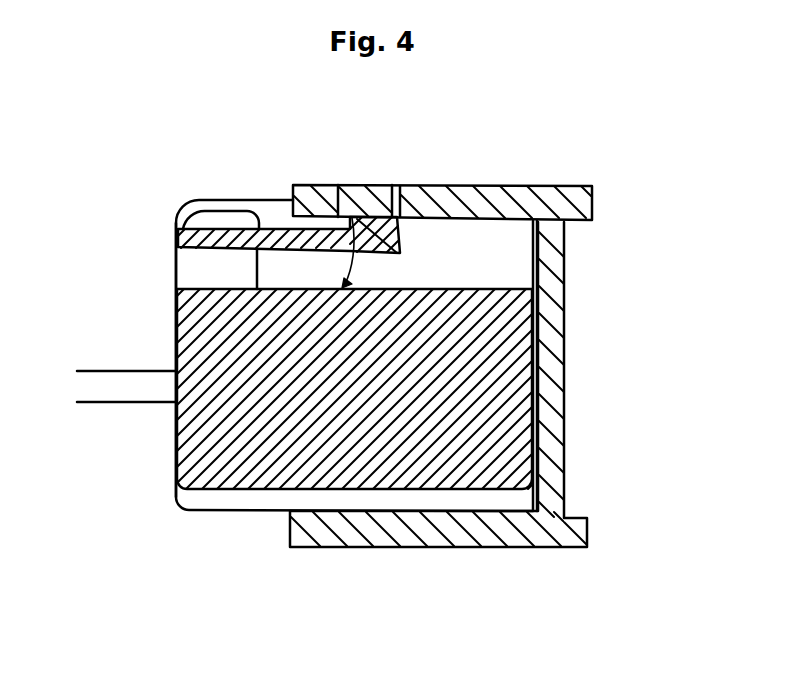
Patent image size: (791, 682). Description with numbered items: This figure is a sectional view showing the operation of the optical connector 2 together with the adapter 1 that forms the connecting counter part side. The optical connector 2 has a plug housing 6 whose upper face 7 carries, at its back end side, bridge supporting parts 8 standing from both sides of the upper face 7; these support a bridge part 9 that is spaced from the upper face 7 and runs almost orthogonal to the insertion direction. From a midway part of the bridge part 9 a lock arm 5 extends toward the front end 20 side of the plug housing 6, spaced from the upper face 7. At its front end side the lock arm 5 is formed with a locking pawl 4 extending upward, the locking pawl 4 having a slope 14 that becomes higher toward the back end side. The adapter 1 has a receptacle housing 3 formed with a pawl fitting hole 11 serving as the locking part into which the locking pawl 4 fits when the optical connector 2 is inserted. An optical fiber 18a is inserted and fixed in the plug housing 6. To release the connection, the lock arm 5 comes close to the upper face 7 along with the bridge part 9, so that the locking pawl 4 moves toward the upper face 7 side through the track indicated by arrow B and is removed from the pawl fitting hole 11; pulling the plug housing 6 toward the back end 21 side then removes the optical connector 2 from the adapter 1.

The adapter 1 is at (371, 558).
The optical connector 2 is at (200, 525).
The receptacle housing 3 is at (431, 533).
The locking pawl 4 is at (372, 240).
The lock arm 5 is at (268, 231).
The plug housing 6 is at (231, 477).
The upper face 7 is at (475, 290).
The bridge supporting parts 8 is at (182, 268).
The bridge part 9 is at (234, 237).
The pawl fitting hole 11 is at (356, 202).
The slope 14 is at (400, 190).
The optical fiber 18a is at (93, 372).
The front end 20 is at (535, 465).
The back end 21 is at (173, 440).
The arrow B is at (358, 253).